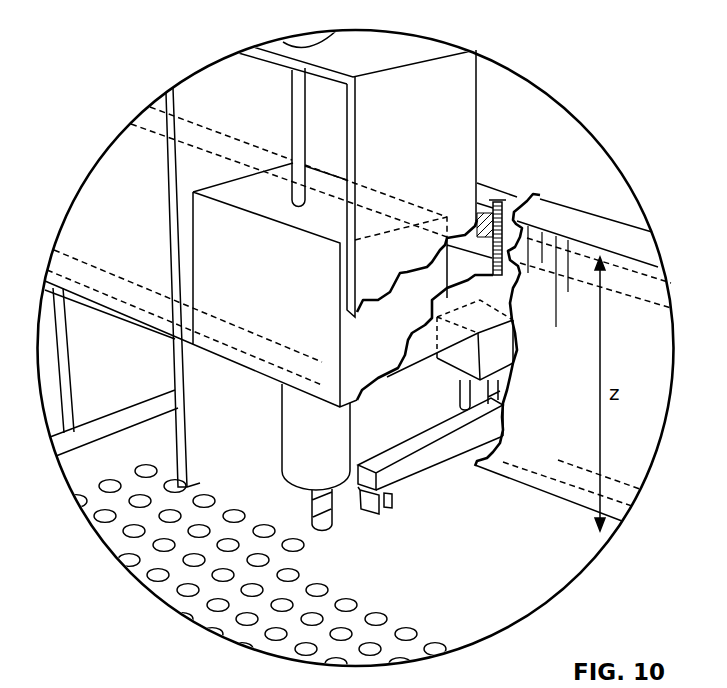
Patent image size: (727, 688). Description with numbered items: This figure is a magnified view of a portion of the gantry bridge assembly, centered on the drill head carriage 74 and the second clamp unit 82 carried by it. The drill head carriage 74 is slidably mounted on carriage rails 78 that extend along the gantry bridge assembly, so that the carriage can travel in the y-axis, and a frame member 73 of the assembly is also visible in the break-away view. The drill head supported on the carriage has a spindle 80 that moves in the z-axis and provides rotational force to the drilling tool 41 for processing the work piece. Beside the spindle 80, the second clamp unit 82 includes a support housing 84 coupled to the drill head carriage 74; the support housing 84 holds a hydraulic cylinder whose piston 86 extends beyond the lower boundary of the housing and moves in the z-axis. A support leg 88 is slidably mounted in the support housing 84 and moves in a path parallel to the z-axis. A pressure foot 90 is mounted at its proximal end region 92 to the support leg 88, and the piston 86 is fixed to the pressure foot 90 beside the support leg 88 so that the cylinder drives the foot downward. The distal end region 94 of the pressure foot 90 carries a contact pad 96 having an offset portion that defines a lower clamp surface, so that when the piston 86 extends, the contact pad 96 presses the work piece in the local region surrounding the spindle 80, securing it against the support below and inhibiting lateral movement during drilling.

The drilling tool 41 is at (311, 500).
The horizontal frame rail 73 is at (564, 219).
The drill head carriage 74 is at (156, 190).
The carriage rails 78 is at (581, 262).
The spindle 80 is at (290, 424).
The second clamp unit 82 is at (452, 466).
The support housing 84 is at (517, 382).
The piston 86 is at (457, 393).
The support leg 88 is at (497, 392).
The pressure foot 90 is at (400, 494).
The proximal end region 92 is at (486, 433).
The distal end region 94 is at (386, 510).
The contact pad 96 is at (368, 512).